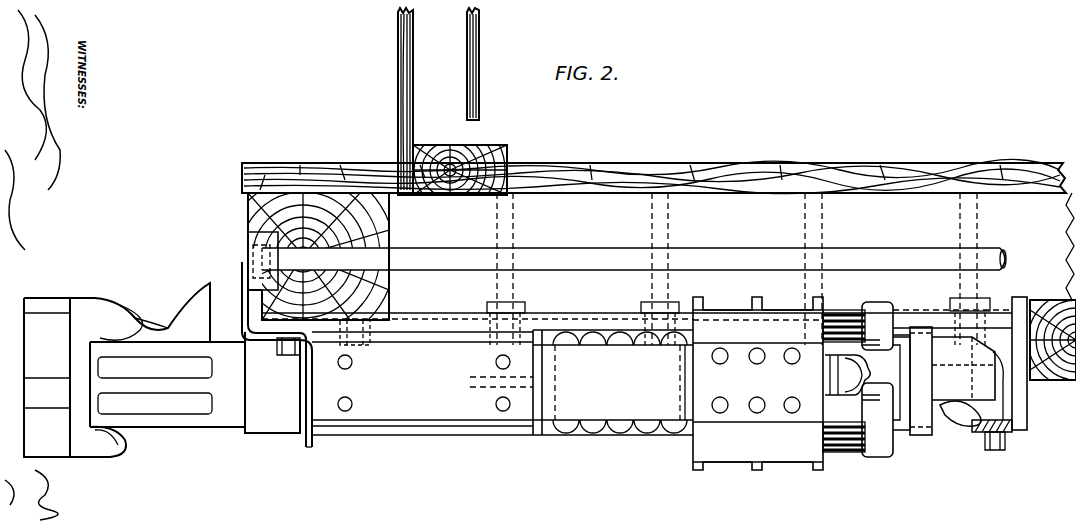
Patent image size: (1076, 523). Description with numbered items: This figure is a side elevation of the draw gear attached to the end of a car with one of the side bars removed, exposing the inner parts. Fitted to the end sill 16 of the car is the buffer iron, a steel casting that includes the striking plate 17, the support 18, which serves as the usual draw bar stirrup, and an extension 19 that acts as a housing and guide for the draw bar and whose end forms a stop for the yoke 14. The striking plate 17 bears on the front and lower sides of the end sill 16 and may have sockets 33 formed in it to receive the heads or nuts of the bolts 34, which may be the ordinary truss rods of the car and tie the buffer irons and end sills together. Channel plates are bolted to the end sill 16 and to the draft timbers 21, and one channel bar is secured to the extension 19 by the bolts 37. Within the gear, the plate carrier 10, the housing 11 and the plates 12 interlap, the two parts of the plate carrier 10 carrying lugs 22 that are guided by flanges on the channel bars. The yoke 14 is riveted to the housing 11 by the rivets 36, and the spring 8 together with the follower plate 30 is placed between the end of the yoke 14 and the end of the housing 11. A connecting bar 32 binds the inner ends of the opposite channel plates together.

The spring 8 is at (628, 430).
The plate carrier 10 is at (867, 382).
The housing 11 is at (758, 383).
The plate 12 is at (838, 310).
The yoke 14 is at (613, 382).
The end sill 16 is at (313, 240).
The striking plate 17 is at (242, 308).
The support 18 is at (272, 382).
The extension 19 is at (637, 374).
The draft timber 21 is at (654, 196).
The lug 22 is at (878, 379).
The follower plate 30 is at (688, 437).
The connecting bar 32 is at (1012, 426).
The socket 33 is at (275, 236).
The bolt 34 is at (634, 258).
The rivet 36 is at (724, 362).
The bolt 37 is at (340, 372).